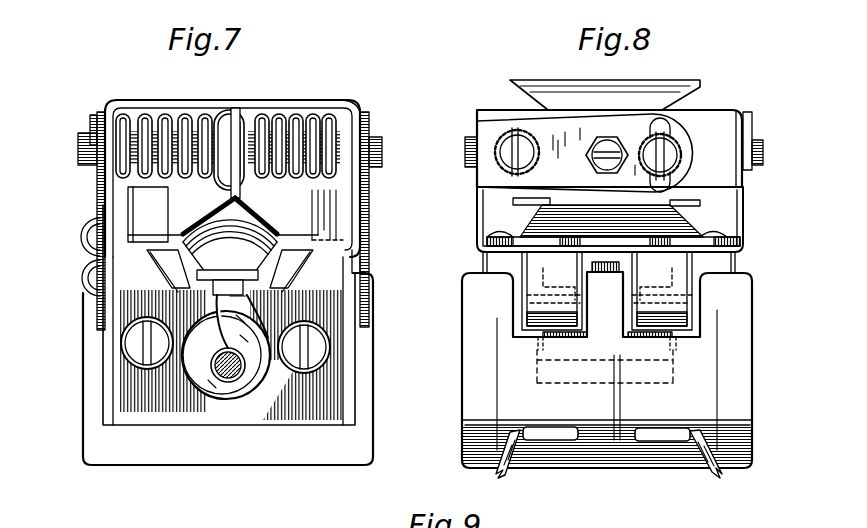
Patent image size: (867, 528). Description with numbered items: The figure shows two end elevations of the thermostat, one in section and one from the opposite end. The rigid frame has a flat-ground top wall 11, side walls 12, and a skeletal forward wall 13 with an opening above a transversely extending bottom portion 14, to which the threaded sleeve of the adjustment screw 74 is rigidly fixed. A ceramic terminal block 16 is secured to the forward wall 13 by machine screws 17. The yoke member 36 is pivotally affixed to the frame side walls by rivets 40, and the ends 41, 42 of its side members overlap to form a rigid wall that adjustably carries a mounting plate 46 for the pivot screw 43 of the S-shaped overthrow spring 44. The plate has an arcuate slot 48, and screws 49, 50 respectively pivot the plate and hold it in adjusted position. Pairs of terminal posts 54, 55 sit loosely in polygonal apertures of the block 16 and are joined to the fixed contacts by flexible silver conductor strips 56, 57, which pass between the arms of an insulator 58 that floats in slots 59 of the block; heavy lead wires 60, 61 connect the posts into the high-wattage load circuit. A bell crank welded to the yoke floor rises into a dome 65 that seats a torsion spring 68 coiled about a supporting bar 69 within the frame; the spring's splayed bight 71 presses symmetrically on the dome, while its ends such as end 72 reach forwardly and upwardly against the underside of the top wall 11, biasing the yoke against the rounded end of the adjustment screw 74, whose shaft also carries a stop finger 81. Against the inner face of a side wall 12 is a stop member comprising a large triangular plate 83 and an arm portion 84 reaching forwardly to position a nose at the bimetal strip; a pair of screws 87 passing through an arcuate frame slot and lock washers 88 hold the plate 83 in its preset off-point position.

In FIG. 7, the top wall 11 is at (225, 100).
In FIG. 7, the side walls 12 is at (355, 276).
In FIG. 7, the forward wall 13 is at (322, 215).
In FIG. 7, the bottom portion 14 is at (212, 418).
In FIG. 7, the ceramic terminal block 16 is at (285, 455).
In FIG. 8, the ceramic terminal block 16 is at (753, 332).
In FIG. 7, the machine screws 17 is at (135, 345).
In FIG. 7, the yoke member 36 is at (369, 186).
In FIG. 7, the rivets 40 is at (382, 152).
In FIG. 8, the rivets 40 is at (465, 155).
In FIG. 8, the end of yoke side member 41 is at (728, 130).
In FIG. 8, the end of yoke side member 42 is at (703, 183).
In FIG. 8, the pivot screw 43 is at (614, 148).
In FIG. 8, the S-shaped overthrow spring 44 is at (555, 78).
In FIG. 8, the mounting plate 46 is at (480, 190).
In FIG. 8, the arcuate slot 48 is at (667, 122).
In FIG. 8, the screw 49 is at (515, 130).
In FIG. 8, the screw 50 is at (680, 152).
In FIG. 8, the terminal posts 54 is at (552, 440).
In FIG. 8, the terminal posts 55 is at (662, 441).
In FIG. 8, the flexible conductor strips 56 is at (543, 265).
In FIG. 8, the flexible conductor strips 57 is at (672, 267).
In FIG. 8, the insulator 58 is at (537, 383).
In FIG. 8, the slots 59 is at (537, 360).
In FIG. 8, the lead wires 60 is at (506, 455).
In FIG. 8, the lead wires 61 is at (718, 460).
In FIG. 7, the dome 65 is at (229, 256).
In FIG. 7, the torsion spring 68 is at (318, 112).
In FIG. 7, the supporting bar 69 is at (283, 112).
In FIG. 7, the bight 71 is at (242, 206).
In FIG. 7, the spring end 72 is at (353, 116).
In FIG. 7, the adjustment screw 74 is at (213, 368).
In FIG. 7, the finger 81 is at (262, 295).
In FIG. 7, the triangular plate 83 is at (118, 221).
In FIG. 7, the arm portion 84 is at (157, 205).
In FIG. 7, the screws 87 is at (82, 272).
In FIG. 7, the lock washers 88 is at (97, 306).